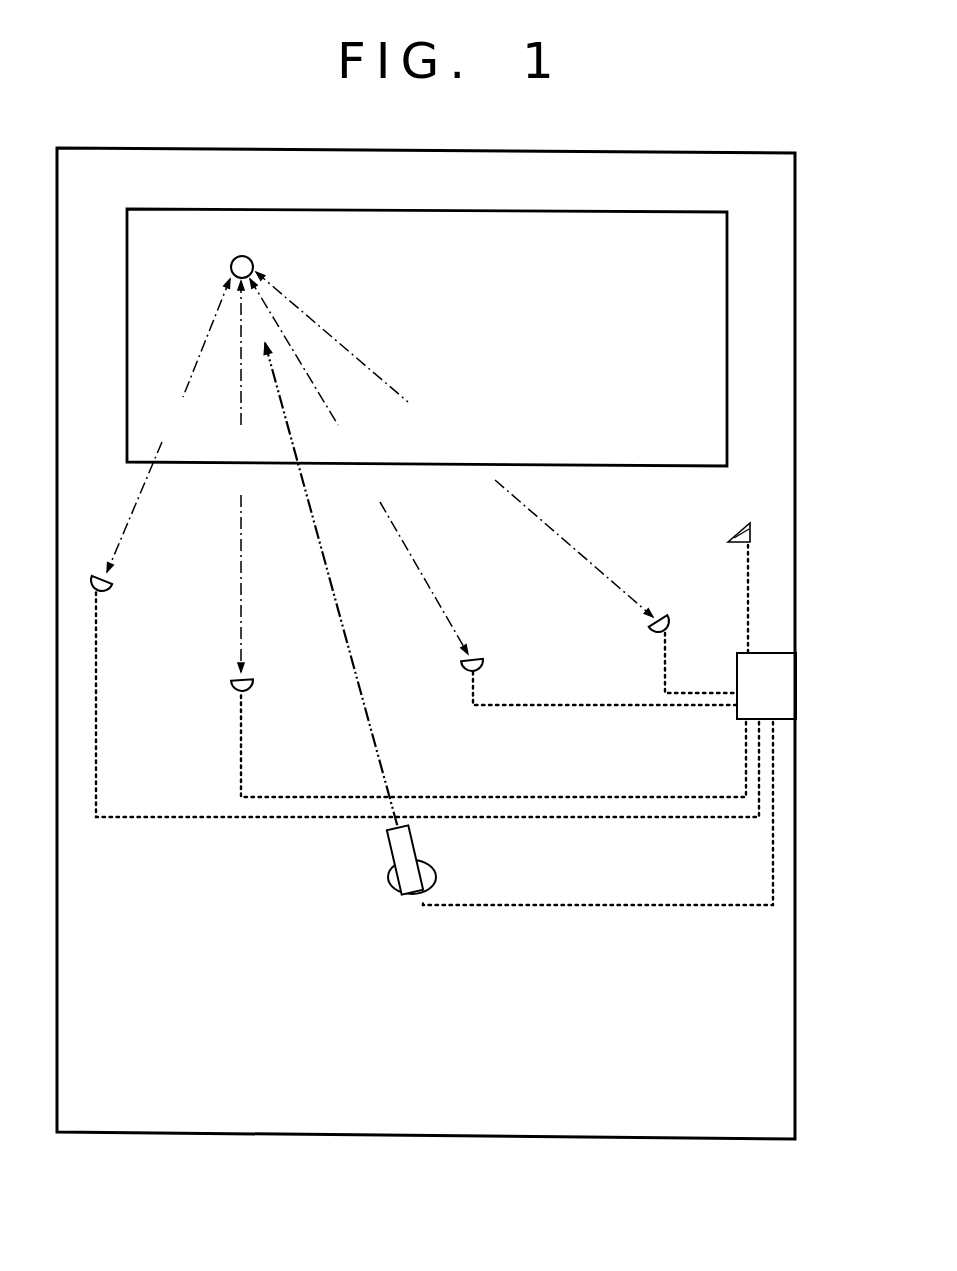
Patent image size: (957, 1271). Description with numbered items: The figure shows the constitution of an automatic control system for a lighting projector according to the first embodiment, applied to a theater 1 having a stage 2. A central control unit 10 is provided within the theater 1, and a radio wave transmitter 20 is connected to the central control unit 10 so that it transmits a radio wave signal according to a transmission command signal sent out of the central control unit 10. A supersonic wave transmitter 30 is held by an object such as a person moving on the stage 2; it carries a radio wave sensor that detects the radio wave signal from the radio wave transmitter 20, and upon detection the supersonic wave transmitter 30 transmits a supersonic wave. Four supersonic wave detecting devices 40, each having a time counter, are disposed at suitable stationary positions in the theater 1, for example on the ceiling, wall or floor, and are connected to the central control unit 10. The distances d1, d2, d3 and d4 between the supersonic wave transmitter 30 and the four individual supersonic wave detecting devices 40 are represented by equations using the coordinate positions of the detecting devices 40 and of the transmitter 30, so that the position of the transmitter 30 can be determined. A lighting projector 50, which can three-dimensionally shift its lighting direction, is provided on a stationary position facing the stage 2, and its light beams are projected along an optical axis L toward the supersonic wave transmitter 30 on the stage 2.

The theater 1 is at (797, 253).
The stage 2 is at (542, 210).
The central control unit 10 is at (797, 683).
The radio wave transmitter 20 is at (728, 535).
The supersonic wave transmitter 30 is at (252, 259).
The supersonic wave detecting device 40 is at (110, 584).
The lighting projector 50 is at (388, 853).
The optical axis L is at (372, 732).
The distance d1 is at (168, 425).
The distance d2 is at (251, 476).
The distance d3 is at (359, 466).
The distance d4 is at (454, 444).